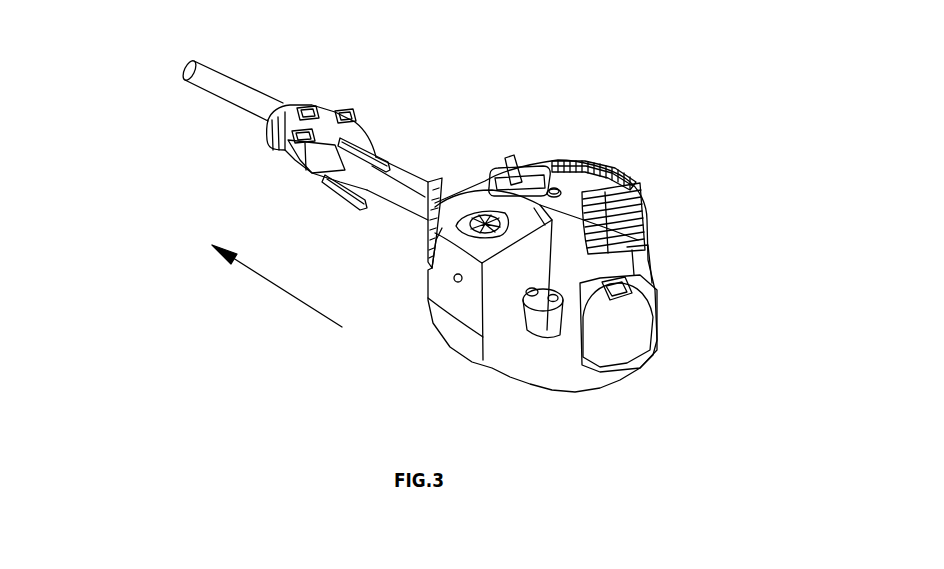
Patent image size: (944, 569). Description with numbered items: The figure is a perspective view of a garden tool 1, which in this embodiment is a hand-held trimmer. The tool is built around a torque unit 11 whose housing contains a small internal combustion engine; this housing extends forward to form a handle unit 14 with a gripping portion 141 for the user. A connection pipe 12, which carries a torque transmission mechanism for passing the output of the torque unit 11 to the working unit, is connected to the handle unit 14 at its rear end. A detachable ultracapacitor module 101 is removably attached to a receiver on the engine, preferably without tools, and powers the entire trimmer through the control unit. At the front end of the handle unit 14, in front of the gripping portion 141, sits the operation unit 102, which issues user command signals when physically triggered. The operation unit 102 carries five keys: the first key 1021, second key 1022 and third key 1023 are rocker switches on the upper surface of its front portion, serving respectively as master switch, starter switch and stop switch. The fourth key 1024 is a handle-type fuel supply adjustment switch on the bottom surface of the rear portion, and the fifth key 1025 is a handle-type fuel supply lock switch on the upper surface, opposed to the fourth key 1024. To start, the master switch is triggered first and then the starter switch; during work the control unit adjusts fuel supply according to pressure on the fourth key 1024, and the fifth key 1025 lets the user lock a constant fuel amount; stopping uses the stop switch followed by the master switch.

The garden tool 1 is at (528, 98).
The torque unit 11 is at (582, 407).
The connection pipe 12 is at (200, 99).
The handle unit 14 is at (350, 225).
The gripping portion 141 is at (425, 183).
The ultracapacitor module 101 is at (652, 296).
The operation unit 102 is at (322, 113).
The first key 1021 is at (295, 146).
The second key 1022 is at (348, 112).
The third key 1023 is at (305, 104).
The fourth key 1024 is at (343, 191).
The fifth key 1025 is at (358, 150).